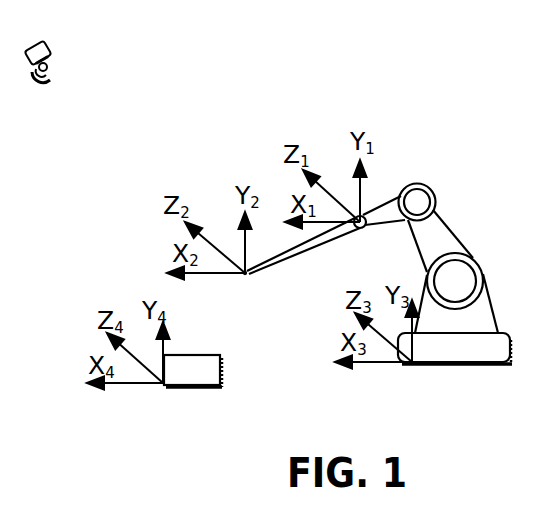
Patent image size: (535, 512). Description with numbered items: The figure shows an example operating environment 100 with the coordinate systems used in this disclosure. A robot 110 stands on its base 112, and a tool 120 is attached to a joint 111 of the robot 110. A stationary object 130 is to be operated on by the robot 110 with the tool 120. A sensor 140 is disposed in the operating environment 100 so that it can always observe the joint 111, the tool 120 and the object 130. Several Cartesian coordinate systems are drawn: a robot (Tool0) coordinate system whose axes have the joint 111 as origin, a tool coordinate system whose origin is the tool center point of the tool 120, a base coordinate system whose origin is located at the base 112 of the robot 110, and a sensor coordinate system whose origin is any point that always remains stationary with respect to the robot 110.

The operating environment 100 is at (254, 79).
The robot 110 is at (413, 183).
The joint 111 is at (362, 232).
The base 112 is at (465, 365).
The tool 120 is at (262, 277).
The object 130 is at (222, 362).
The sensor 140 is at (47, 46).